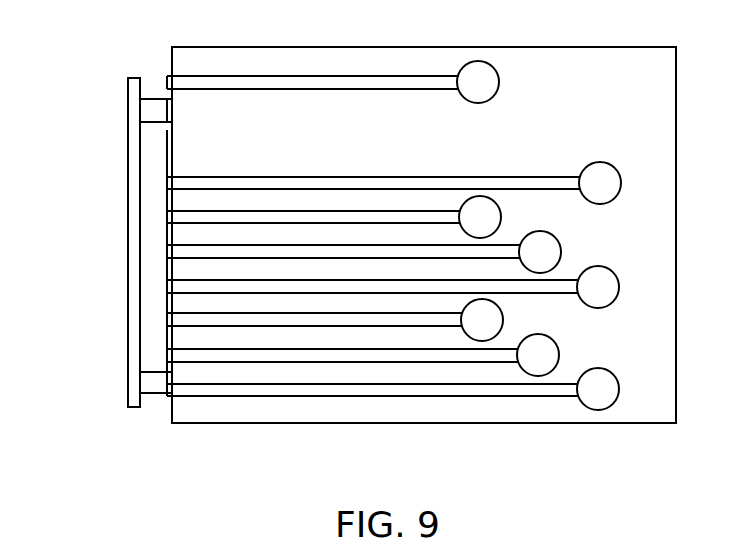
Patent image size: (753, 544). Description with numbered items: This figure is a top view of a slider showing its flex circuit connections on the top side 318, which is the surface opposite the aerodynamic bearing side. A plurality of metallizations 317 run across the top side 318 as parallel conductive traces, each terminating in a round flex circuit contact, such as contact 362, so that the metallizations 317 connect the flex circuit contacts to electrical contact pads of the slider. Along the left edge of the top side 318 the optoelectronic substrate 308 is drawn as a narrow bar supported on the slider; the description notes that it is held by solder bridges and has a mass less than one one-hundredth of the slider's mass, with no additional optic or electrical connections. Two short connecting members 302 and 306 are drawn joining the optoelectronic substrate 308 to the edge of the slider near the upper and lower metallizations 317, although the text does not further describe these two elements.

The upper connector 302 is at (168, 124).
The lower connector 306 is at (167, 265).
The optoelectronic substrate 308 is at (128, 240).
The metallization 317 is at (324, 80).
The top side 318 is at (611, 105).
The flex circuit contact 362 is at (562, 250).